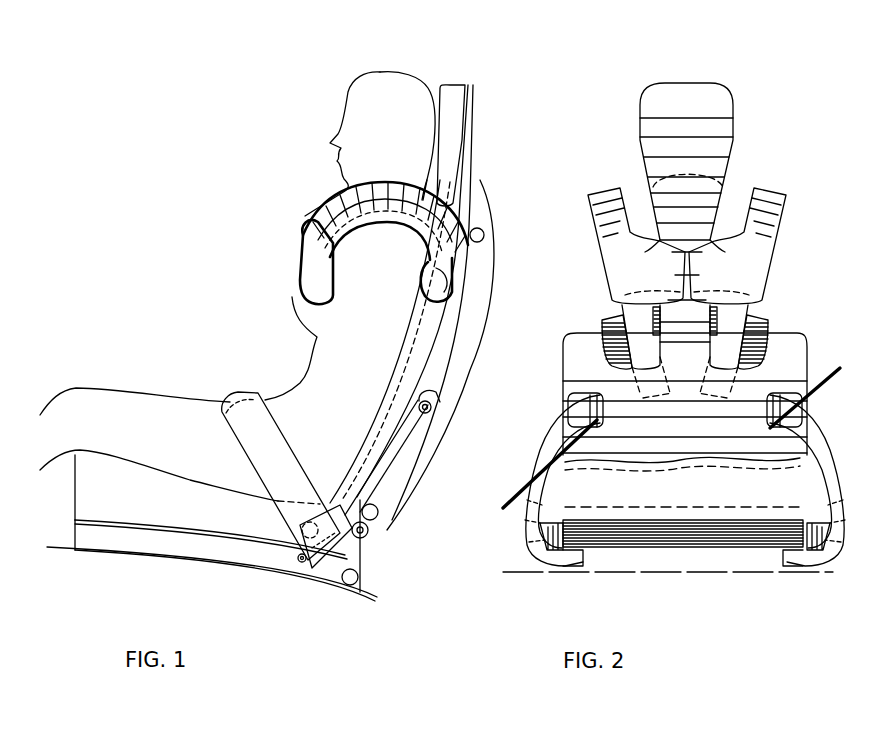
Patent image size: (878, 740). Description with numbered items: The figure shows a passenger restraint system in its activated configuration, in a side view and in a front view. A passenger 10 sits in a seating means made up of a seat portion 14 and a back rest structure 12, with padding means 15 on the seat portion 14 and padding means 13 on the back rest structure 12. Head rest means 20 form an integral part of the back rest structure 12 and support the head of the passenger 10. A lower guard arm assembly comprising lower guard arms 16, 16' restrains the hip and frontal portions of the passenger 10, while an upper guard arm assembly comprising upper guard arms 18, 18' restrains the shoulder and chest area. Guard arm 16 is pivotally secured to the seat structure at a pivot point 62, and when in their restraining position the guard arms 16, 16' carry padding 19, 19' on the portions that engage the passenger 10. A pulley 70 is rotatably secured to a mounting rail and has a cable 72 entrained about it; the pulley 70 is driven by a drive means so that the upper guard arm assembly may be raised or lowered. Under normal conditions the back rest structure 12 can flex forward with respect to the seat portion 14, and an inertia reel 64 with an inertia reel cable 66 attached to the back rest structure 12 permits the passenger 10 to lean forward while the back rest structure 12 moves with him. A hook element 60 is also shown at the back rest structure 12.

In FIG. 1, the passenger 10 is at (398, 82).
In FIG. 1, the back rest structure 12 is at (423, 347).
In FIG. 1, the padding means 13 is at (410, 383).
In FIG. 1, the seat portion 14 is at (158, 550).
In FIG. 1, the padding means 15 is at (158, 510).
In FIG. 1, the lower guard arm 16 is at (281, 476).
In FIG. 2, the lower guard arm 16 is at (817, 479).
In FIG. 2, the lower guard arm 16' is at (561, 479).
In FIG. 1, the upper guard arm 18 is at (408, 224).
In FIG. 2, the upper guard arm 18 is at (746, 263).
In FIG. 2, the upper guard arm 18' is at (636, 261).
In FIG. 2, the padding 19 is at (537, 471).
In FIG. 2, the padding 19' is at (824, 391).
In FIG. 1, the head rest means 20 is at (455, 98).
In FIG. 2, the head rest means 20 is at (697, 130).
In FIG. 1, the hook latch 60 is at (433, 407).
In FIG. 1, the pivot point 62 is at (300, 540).
In FIG. 1, the inertia reel 64 is at (358, 580).
In FIG. 1, the inertia reel cable 66 is at (362, 561).
In FIG. 1, the pulley 70 is at (380, 513).
In FIG. 1, the cable 72 is at (382, 465).